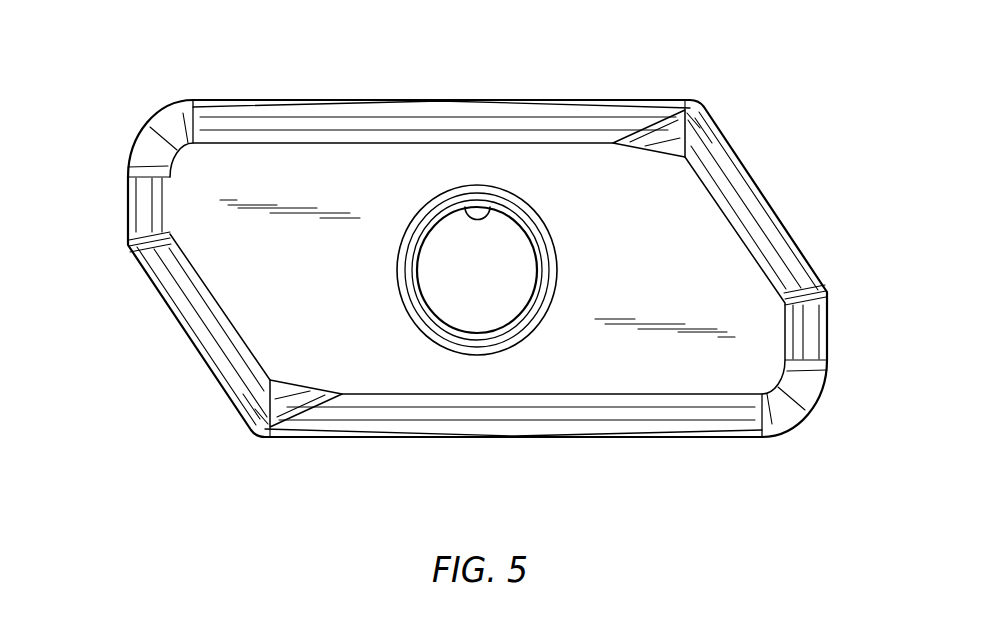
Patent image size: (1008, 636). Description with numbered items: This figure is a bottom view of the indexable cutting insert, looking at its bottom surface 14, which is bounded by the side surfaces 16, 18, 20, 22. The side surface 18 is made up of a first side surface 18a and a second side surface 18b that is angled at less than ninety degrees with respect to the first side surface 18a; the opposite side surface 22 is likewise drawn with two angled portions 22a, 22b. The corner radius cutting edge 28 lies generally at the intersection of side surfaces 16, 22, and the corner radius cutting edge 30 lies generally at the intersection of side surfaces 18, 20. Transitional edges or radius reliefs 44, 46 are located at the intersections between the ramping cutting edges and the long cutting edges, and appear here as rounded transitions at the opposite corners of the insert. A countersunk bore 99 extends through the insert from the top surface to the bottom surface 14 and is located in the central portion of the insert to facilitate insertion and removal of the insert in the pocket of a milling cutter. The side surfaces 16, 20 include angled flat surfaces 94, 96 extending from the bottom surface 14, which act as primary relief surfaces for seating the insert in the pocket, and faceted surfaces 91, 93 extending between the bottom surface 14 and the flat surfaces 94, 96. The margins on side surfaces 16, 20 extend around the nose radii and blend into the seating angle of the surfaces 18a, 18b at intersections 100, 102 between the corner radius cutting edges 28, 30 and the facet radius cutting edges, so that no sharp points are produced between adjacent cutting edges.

The bottom surface 14 is at (437, 180).
The side surface 16 is at (356, 93).
The side surface 18 is at (795, 233).
The first side surface 18a is at (743, 195).
The second side surface 18b is at (812, 323).
The side surface 20 is at (592, 444).
The side surface 22 is at (153, 303).
The inclined side edge portion 22a is at (203, 330).
The straight side edge portion 22b is at (142, 210).
The corner radius cutting edge 28 is at (152, 120).
The corner radius cutting edge 30 is at (798, 420).
The transitional edge 44 is at (252, 437).
The transitional edge 46 is at (700, 102).
The faceted surface 91 is at (664, 125).
The faceted surface 93 is at (295, 410).
The angled flat surface 94 is at (302, 120).
The angled flat surface 96 is at (422, 415).
The countersunk bore 99 is at (490, 207).
The intersection 100 is at (186, 100).
The intersection 102 is at (763, 433).